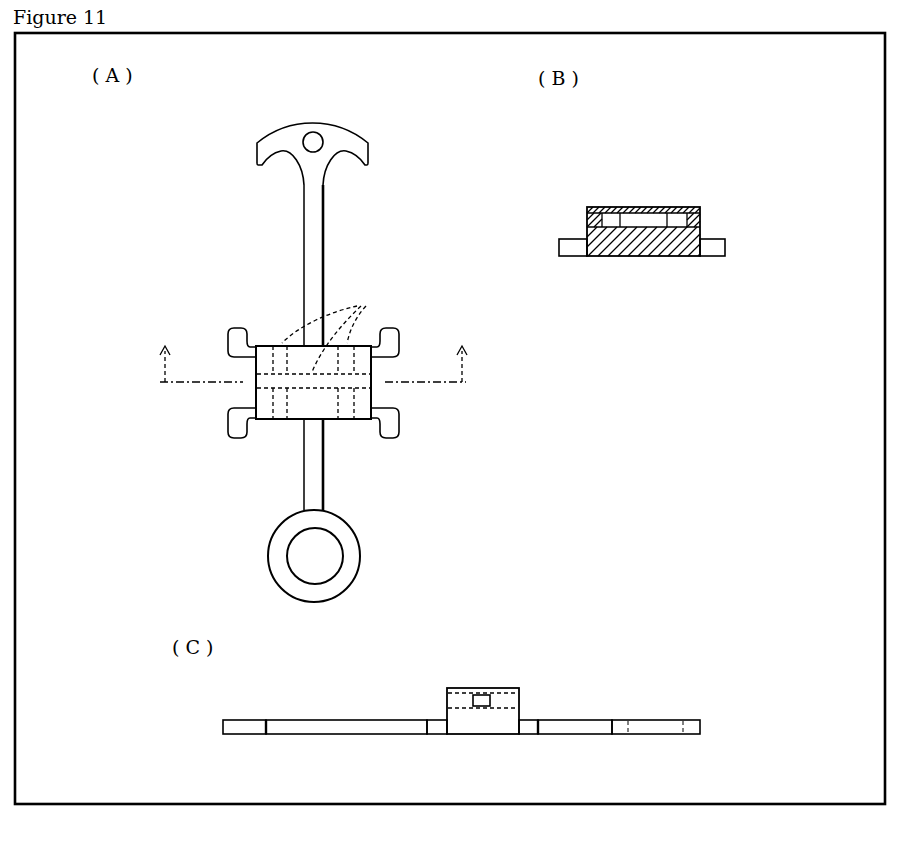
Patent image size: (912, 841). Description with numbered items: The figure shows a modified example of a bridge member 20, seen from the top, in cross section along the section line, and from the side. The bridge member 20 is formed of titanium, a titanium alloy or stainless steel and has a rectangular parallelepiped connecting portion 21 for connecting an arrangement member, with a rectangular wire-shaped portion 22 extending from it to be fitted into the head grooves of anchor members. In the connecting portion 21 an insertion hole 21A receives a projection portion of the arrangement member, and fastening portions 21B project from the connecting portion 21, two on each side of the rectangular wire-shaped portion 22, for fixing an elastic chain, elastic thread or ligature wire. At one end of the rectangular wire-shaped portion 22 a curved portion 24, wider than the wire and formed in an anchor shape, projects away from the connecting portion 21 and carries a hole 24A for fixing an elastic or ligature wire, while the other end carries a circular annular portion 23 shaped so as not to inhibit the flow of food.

The bridge member 20 is at (258, 114).
The connecting portion 21 is at (365, 369).
The insertion hole 21A is at (506, 688).
The fastening portion 21B is at (236, 422).
The rectangular wire-shaped portion 22 is at (315, 237).
The annular portion 23 is at (350, 556).
The curved portion 24 is at (350, 139).
The hole 24A is at (313, 131).